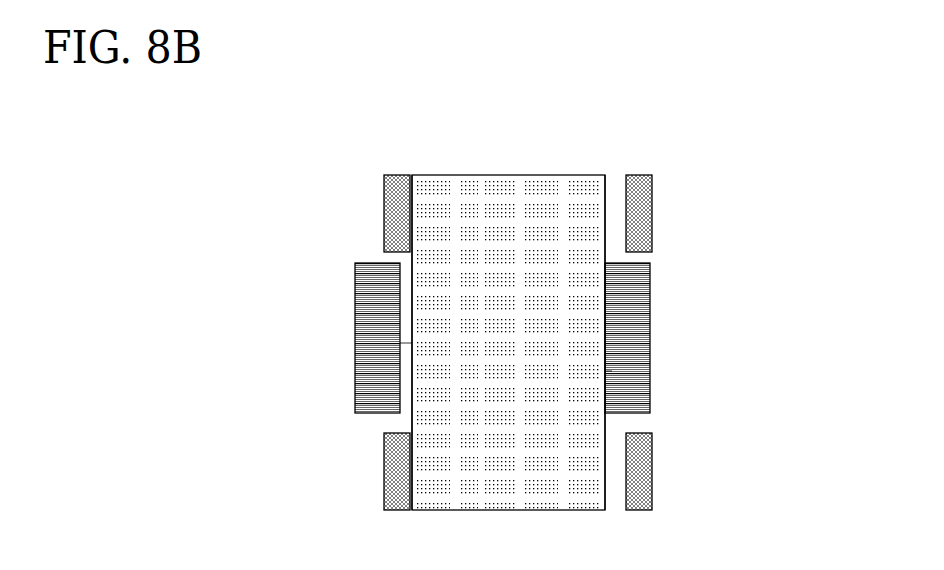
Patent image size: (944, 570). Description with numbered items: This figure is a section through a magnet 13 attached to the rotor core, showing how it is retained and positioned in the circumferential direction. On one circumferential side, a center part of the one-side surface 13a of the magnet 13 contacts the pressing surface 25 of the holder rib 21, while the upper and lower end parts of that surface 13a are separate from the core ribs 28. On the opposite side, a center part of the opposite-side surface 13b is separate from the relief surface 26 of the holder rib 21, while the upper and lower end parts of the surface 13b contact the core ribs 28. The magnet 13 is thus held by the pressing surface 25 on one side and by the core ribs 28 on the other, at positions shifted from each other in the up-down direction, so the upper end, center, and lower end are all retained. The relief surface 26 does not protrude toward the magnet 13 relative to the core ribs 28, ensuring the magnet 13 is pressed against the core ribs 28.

The magnet 13 is at (497, 200).
The circumferential-direction one-side surface 13a is at (603, 227).
The circumferential-direction opposite-side surface 13b is at (412, 293).
The holder rib 21 is at (378, 382).
The pressing surface 25 is at (605, 370).
The relief surface 26 is at (400, 344).
The core ribs 28 is at (395, 200).